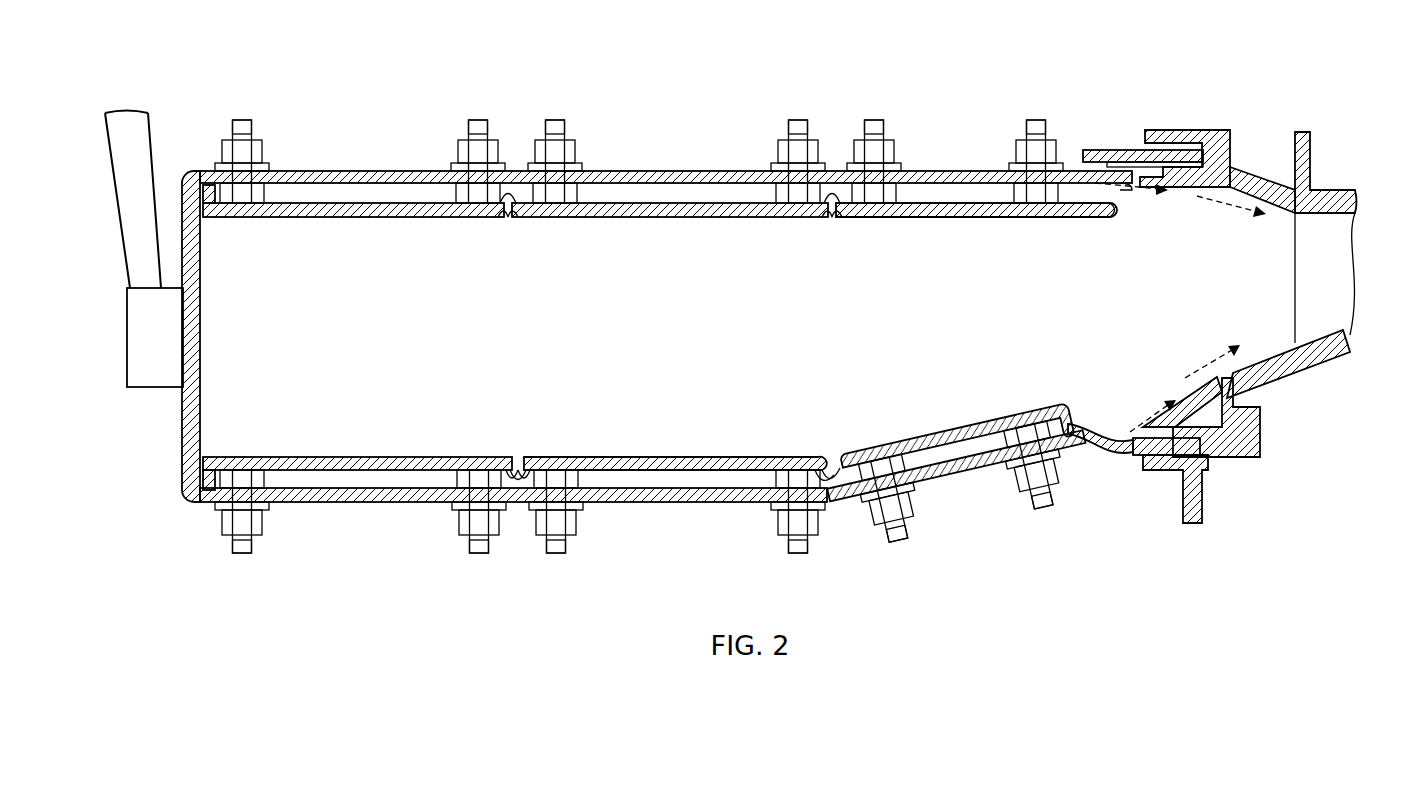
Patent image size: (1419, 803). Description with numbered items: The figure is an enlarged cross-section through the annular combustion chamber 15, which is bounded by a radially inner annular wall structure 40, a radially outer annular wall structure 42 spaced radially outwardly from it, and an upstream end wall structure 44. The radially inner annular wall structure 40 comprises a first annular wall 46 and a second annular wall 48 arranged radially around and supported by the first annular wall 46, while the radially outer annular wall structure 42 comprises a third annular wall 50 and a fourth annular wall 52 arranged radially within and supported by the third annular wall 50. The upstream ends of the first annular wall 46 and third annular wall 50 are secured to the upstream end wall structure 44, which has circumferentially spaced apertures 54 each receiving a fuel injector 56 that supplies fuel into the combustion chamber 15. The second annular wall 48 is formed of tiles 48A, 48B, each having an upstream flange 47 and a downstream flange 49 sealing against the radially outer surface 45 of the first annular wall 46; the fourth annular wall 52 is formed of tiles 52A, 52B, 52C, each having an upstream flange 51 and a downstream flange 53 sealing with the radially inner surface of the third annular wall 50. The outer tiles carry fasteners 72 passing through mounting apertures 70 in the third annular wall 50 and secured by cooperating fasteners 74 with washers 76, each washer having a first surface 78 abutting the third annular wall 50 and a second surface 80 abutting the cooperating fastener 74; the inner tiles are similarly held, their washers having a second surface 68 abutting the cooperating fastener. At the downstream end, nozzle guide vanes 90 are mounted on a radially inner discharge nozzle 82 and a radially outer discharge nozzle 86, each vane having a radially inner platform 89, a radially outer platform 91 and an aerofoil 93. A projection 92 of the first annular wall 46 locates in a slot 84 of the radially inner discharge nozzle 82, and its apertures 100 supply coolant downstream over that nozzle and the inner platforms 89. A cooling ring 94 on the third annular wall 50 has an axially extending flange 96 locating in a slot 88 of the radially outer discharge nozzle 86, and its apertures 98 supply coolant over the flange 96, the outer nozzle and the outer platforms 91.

The combustion chamber 15 is at (712, 114).
The radially inner annular wall structure 40 is at (1106, 498).
The radially outer annular wall structure 42 is at (1092, 128).
The upstream end wall structure 44 is at (188, 425).
The radially outer surface 45 is at (657, 475).
The first annular wall 46 is at (730, 502).
The flange 47 is at (205, 480).
The second annular wall 48 is at (767, 457).
The segment or tile 48A is at (315, 457).
The segment or tile 48B is at (655, 455).
The flange 49 is at (512, 472).
The third annular wall 50 is at (748, 172).
The flange 51 is at (200, 190).
The fourth annular wall 52 is at (750, 217).
The segment or tile 52A is at (383, 217).
The segment or tile 52B is at (650, 217).
The segment or tile 52C is at (960, 217).
The flange 53 is at (505, 205).
The aperture 54 is at (200, 300).
The fuel injector 56 is at (135, 327).
The second surface 68 is at (818, 505).
The mounting aperture 70 is at (250, 200).
The fastener 72 is at (246, 125).
The cooperating fastener 74 is at (263, 152).
The washer 76 is at (222, 167).
The first surface 78 is at (792, 205).
The second surface 80 is at (818, 166).
The radially inner discharge nozzle 82 is at (1245, 460).
The slot 84 is at (1210, 470).
The radially outer discharge nozzle 86 is at (1228, 130).
The slot 88 is at (1185, 130).
The radially inner platform 89 is at (1315, 360).
The nozzle guide vane 90 is at (1297, 260).
The radially outer platform 91 is at (1333, 197).
The projection 92 is at (1135, 452).
The aerofoil 93 is at (1352, 245).
The cooling ring 94 is at (1072, 157).
The axially extending flange 96 is at (1118, 148).
The aperture 98 is at (1095, 183).
The aperture 100 is at (1100, 426).